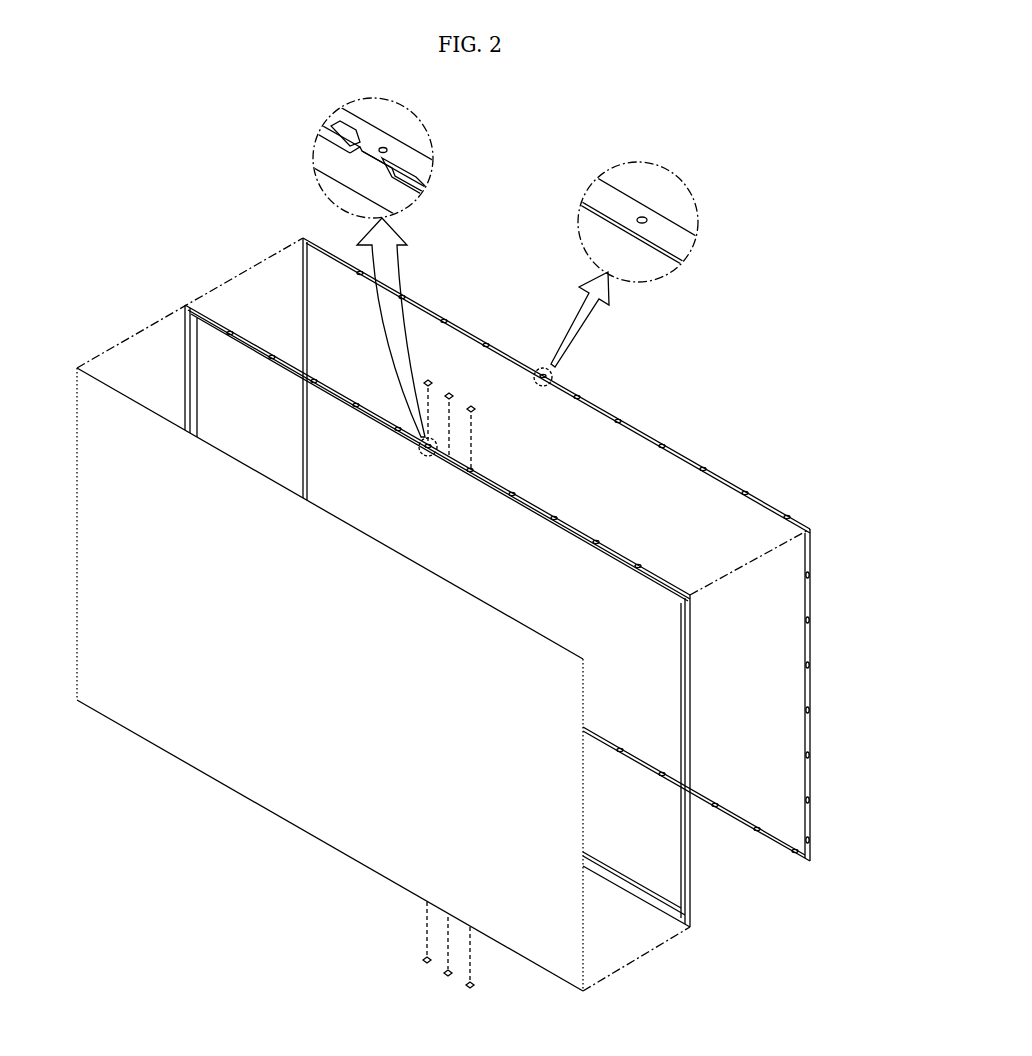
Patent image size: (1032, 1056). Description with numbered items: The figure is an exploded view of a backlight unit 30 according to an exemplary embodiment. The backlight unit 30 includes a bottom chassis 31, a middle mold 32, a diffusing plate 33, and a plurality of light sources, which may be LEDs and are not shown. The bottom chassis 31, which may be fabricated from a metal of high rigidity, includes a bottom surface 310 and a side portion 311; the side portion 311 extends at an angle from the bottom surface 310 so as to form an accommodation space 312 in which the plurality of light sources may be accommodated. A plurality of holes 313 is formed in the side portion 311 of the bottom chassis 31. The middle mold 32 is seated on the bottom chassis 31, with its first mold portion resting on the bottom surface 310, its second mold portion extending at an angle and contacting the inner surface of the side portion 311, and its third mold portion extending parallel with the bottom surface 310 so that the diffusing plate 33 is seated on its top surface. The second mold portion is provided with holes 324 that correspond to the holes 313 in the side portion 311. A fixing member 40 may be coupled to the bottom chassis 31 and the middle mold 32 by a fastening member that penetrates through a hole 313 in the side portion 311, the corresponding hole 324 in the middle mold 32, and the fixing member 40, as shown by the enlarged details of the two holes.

The backlight unit 30 is at (72, 252).
The bottom chassis 31 is at (564, 519).
The middle mold 32 is at (183, 302).
The diffusing plate 33 is at (77, 366).
The fixing member 40 is at (450, 390).
The bottom surface 310 is at (652, 476).
The side portion 311 is at (753, 833).
The accommodation space 312 is at (767, 690).
The holes 313 is at (642, 216).
The holes 324 is at (383, 147).